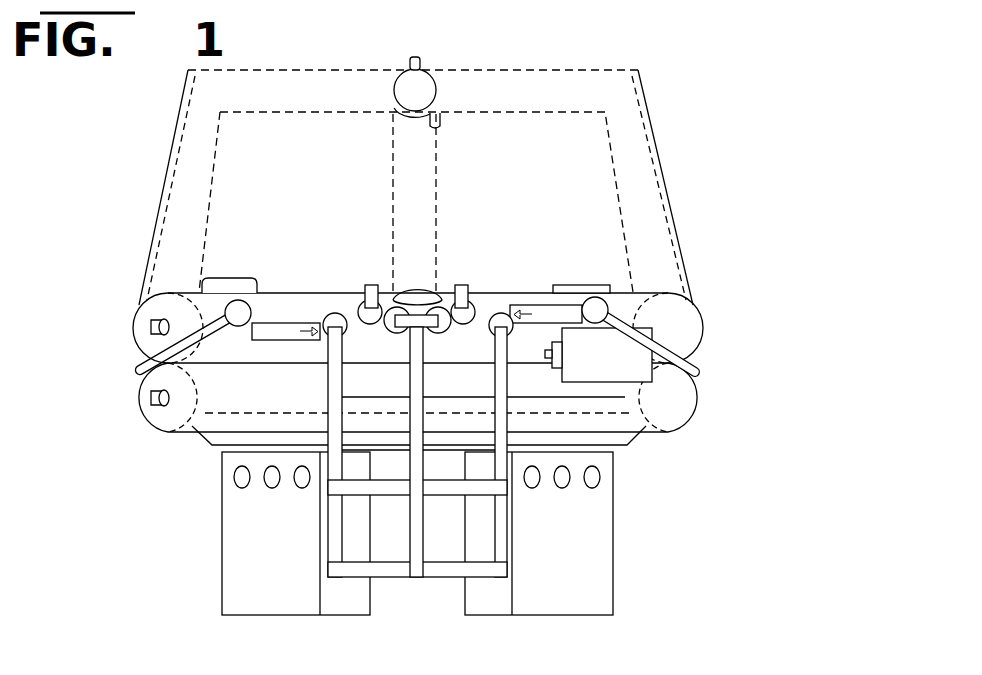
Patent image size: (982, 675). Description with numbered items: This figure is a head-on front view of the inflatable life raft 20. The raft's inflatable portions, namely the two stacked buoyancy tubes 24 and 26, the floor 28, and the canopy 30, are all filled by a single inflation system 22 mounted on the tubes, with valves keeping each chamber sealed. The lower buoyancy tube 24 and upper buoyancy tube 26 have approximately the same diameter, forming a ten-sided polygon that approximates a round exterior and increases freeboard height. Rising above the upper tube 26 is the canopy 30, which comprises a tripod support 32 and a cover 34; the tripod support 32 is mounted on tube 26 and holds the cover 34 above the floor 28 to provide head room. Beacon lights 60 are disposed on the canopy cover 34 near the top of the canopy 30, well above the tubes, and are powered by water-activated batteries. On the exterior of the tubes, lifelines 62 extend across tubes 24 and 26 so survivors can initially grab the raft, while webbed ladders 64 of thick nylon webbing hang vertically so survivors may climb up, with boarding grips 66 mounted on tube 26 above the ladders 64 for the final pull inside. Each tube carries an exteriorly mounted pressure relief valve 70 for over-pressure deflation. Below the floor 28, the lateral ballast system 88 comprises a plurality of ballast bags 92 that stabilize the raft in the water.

The life raft 20 is at (708, 81).
The inflation system 22 is at (614, 385).
The buoyancy tube 24 is at (683, 395).
The buoyancy tube 26 is at (688, 325).
The floor 28 is at (623, 440).
The canopy 30 is at (668, 152).
The tripod support 32 is at (525, 82).
The cover 34 is at (700, 233).
The lights 60 is at (393, 110).
The lifelines 62 is at (175, 312).
The webbed ladders 64 is at (236, 280).
The boarding grips 66 is at (440, 300).
The pressure relief valve 70 is at (140, 330).
The lateral ballast system 88 is at (626, 550).
The ballast bags 92 is at (285, 598).